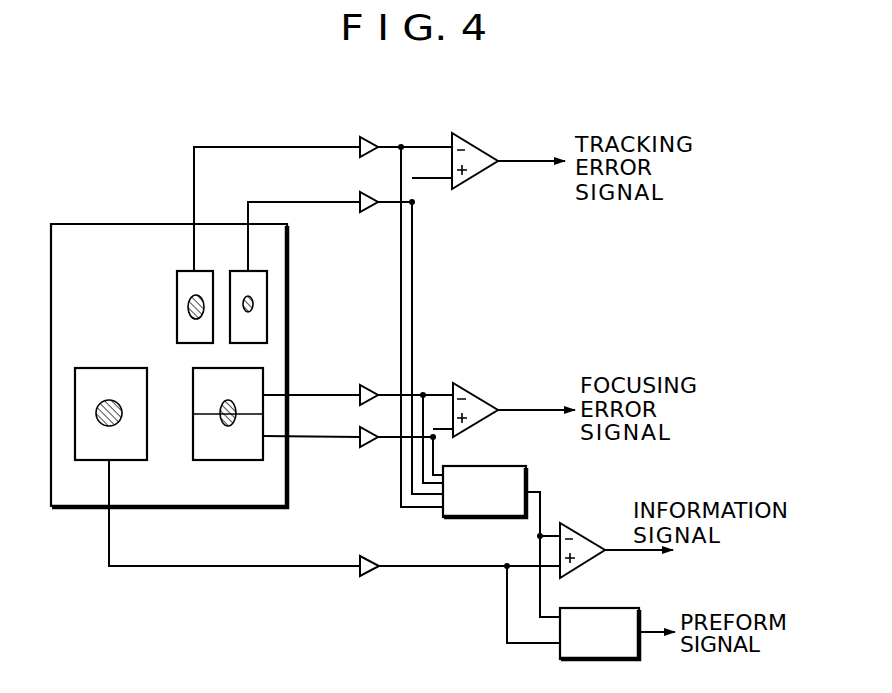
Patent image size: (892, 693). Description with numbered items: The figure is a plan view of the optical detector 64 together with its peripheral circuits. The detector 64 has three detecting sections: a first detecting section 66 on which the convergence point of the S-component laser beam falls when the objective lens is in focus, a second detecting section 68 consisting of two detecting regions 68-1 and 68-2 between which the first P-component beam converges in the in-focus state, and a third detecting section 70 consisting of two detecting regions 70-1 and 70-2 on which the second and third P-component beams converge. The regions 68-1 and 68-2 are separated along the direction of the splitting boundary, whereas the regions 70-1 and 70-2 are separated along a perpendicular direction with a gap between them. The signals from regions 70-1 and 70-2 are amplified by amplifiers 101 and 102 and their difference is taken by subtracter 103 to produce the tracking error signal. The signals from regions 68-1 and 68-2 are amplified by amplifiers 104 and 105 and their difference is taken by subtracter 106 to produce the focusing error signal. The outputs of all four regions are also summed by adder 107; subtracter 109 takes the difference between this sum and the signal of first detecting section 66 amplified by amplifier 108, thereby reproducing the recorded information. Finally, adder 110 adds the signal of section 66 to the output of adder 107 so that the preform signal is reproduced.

The detector 64 is at (93, 224).
The first detecting section 66 is at (134, 457).
The second detecting section 68 is at (273, 418).
The first detecting region of second section 68-1 is at (257, 383).
The second detecting region of second section 68-2 is at (258, 452).
The third detecting section 70 is at (222, 260).
The first detecting region of third section 70-1 is at (190, 280).
The second detecting region of third section 70-2 is at (257, 282).
The amplifier 101 is at (368, 137).
The amplifier 102 is at (365, 212).
The subtracter 103 is at (477, 141).
The amplifier 104 is at (370, 383).
The amplifier 105 is at (365, 448).
The subtracter 106 is at (482, 391).
The adder 107 is at (490, 465).
The amplifier 108 is at (362, 577).
The subtracter 109 is at (587, 530).
The adder 110 is at (605, 608).